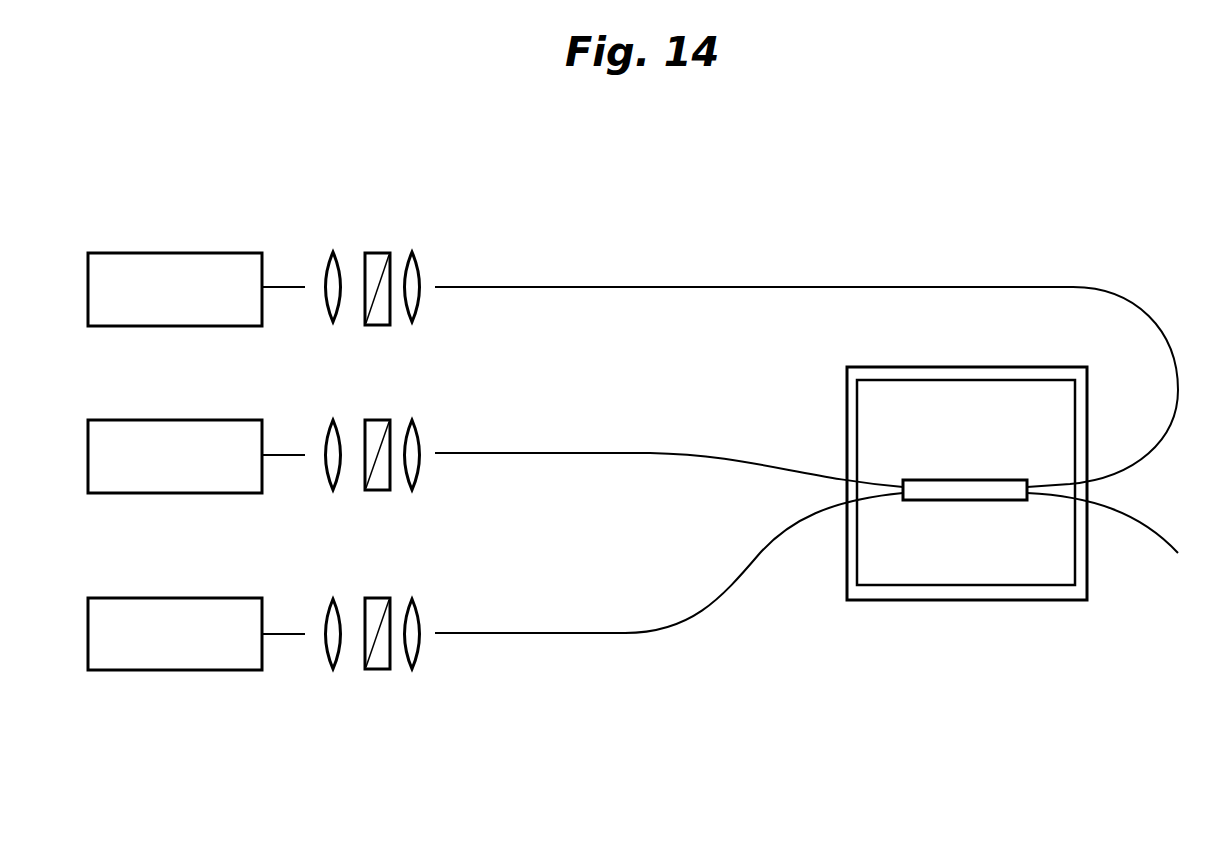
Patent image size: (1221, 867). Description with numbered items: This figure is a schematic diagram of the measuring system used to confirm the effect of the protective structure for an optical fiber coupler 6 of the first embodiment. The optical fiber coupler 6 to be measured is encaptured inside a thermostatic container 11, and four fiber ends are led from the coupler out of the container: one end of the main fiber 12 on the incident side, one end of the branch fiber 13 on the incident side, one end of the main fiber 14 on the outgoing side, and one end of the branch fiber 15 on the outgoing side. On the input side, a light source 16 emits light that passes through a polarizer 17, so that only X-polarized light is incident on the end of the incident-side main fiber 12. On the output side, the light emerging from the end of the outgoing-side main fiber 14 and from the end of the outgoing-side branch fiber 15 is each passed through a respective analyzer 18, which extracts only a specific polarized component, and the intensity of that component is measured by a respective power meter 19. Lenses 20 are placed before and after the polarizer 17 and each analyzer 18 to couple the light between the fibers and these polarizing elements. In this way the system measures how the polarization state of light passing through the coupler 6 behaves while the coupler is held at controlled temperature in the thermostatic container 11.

The optical fiber coupler 6 is at (965, 480).
The thermostatic container 11 is at (925, 367).
The main fiber on the incident side 12 is at (997, 285).
The branch fiber on the incident side 13 is at (1163, 535).
The main fiber on the outgoing side 14 is at (670, 452).
The branch fiber on the outgoing side 15 is at (676, 620).
The light source 16 is at (213, 253).
The polarizer 17 is at (377, 252).
The analyzer 18 is at (378, 420).
The power meter 19 is at (213, 420).
The lens 20 is at (330, 262).